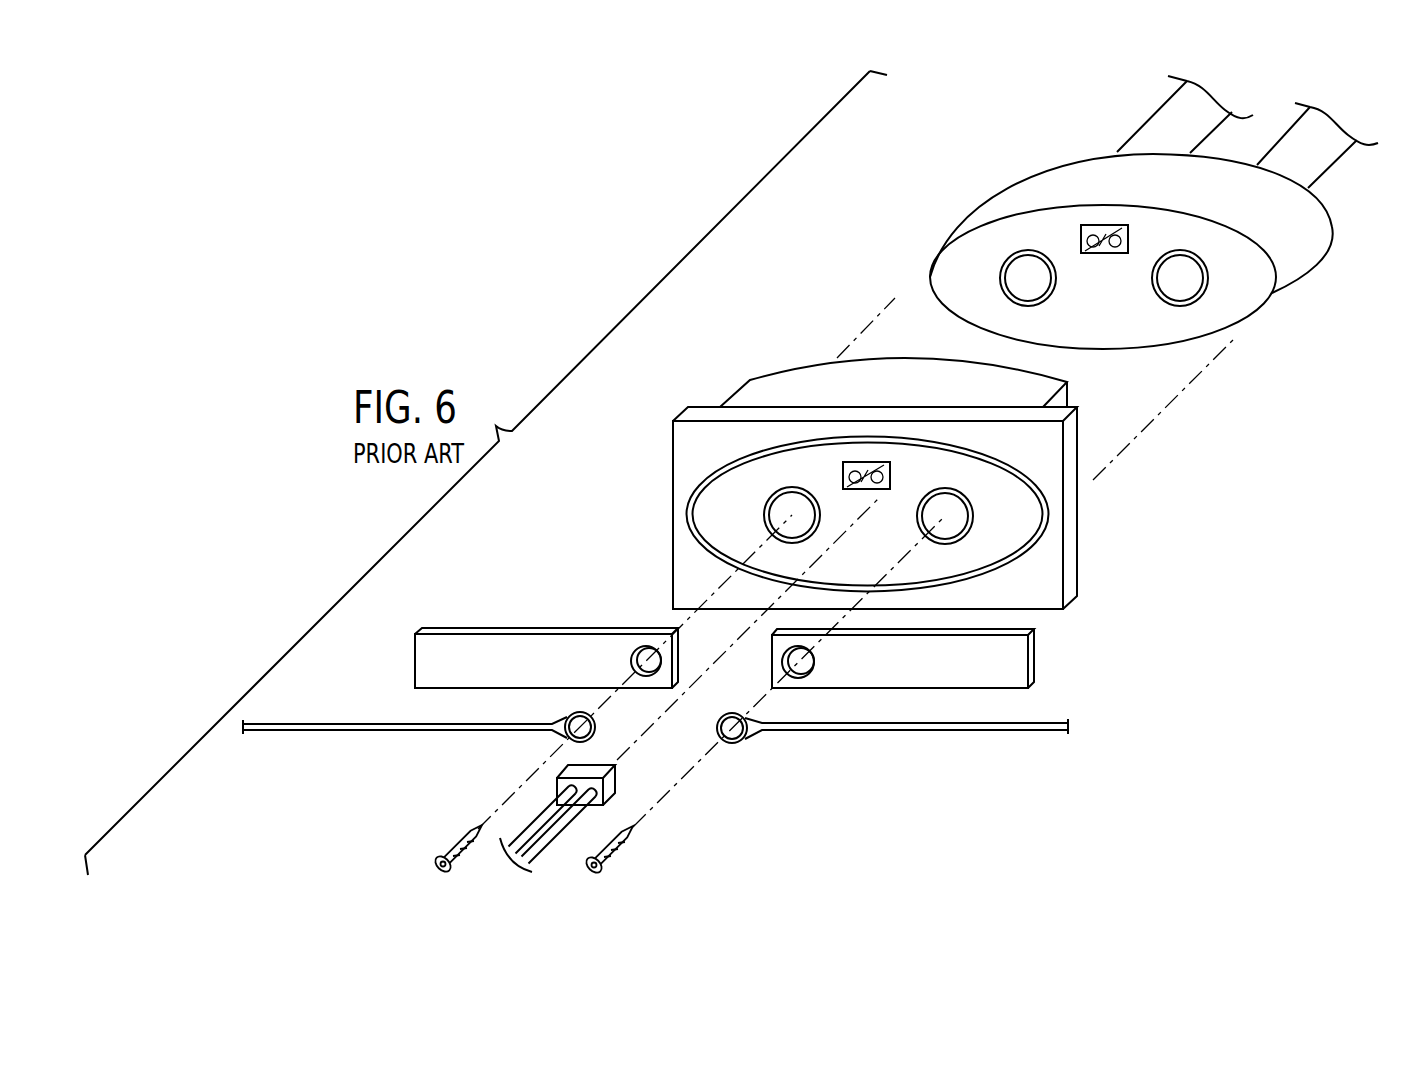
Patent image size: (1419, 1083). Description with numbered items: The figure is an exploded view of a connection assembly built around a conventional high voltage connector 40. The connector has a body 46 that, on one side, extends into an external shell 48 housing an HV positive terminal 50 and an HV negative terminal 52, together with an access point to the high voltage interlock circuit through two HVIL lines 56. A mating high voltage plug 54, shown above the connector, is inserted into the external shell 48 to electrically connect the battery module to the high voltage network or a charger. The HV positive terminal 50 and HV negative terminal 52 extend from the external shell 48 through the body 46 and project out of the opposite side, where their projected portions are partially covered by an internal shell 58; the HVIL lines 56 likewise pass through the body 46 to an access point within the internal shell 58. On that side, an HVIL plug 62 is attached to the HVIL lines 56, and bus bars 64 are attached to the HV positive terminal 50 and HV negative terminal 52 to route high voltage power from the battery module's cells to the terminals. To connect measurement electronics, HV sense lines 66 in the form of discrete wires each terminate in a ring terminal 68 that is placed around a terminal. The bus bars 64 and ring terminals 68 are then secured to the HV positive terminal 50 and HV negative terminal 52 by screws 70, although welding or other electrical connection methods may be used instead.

The high voltage connector 40 is at (641, 437).
The body 46 is at (1077, 548).
The external shell 48 is at (784, 388).
The HV positive terminal 50 is at (787, 510).
The HV negative terminal 52 is at (943, 524).
The mating high voltage plug 54 is at (1317, 218).
The HVIL lines 56 is at (890, 487).
The internal shell 58 is at (980, 563).
The HVIL plug 62 is at (575, 772).
The bus bars 64 is at (415, 660).
The HV sense lines 66 is at (272, 733).
The ring terminals 68 is at (568, 717).
The screws 70 is at (458, 845).